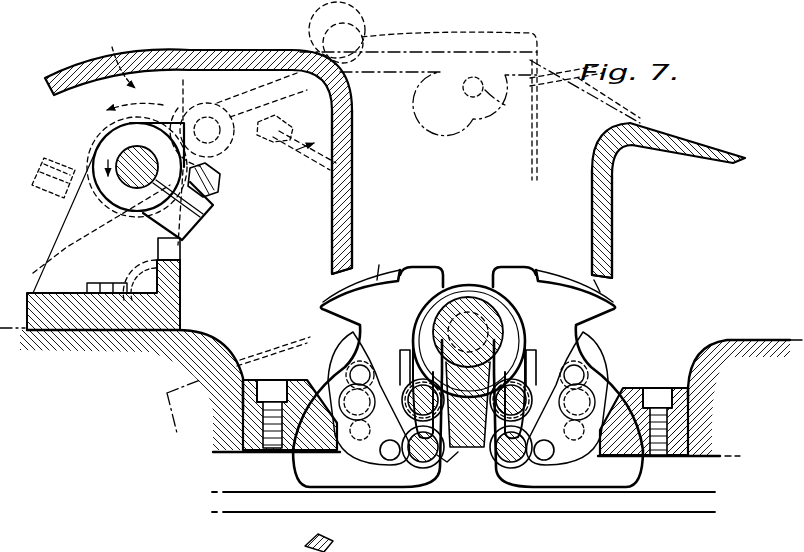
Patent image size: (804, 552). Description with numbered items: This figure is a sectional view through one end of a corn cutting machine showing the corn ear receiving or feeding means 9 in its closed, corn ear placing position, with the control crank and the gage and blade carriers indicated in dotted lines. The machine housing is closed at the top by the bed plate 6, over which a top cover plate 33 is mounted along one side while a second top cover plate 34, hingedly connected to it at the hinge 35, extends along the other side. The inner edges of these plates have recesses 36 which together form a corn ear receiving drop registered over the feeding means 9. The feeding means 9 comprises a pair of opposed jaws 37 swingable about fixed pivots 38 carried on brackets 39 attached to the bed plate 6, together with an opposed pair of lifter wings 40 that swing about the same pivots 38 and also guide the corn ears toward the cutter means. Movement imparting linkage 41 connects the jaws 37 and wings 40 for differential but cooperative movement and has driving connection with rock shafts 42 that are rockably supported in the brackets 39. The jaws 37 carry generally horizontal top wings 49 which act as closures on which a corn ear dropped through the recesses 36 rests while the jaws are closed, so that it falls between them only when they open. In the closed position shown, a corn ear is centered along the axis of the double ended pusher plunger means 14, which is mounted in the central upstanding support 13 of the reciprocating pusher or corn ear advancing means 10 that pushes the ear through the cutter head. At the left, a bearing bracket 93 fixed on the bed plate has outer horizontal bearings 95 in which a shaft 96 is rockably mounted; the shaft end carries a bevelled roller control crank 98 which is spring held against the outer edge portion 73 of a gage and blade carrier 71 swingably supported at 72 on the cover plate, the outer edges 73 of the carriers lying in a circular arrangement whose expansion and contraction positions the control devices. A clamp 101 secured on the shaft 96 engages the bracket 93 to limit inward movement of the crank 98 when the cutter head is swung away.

The bed plate 6 is at (206, 342).
The corn ear receiving or feeding means 9 is at (483, 363).
The pusher or corn ear advancing means 10 is at (503, 320).
The central upstanding support 13 is at (447, 462).
The double ended pusher plunger means 14 is at (502, 318).
The top cover plate 33 is at (678, 143).
The top cover plate 34 is at (236, 52).
The hinge connection 35 is at (482, 104).
The recess 36 is at (340, 212).
The jaw 37 is at (410, 314).
The fixed pivot 38 is at (427, 468).
The bracket 39 is at (360, 487).
The lifter wing 40 is at (394, 368).
The movement imparting linkage 41 is at (360, 457).
The rock shaft 42 is at (478, 447).
The top wing 49 is at (620, 286).
The carrier 71 is at (580, 83).
The carrier pivot 72 is at (383, 28).
The outer edge portion 73 is at (220, 173).
The bearing bracket 93 is at (100, 330).
The outer horizontal bearing 95 is at (68, 265).
The shaft 96 is at (118, 153).
The control crank 98 is at (111, 58).
The clamp 101 is at (196, 222).